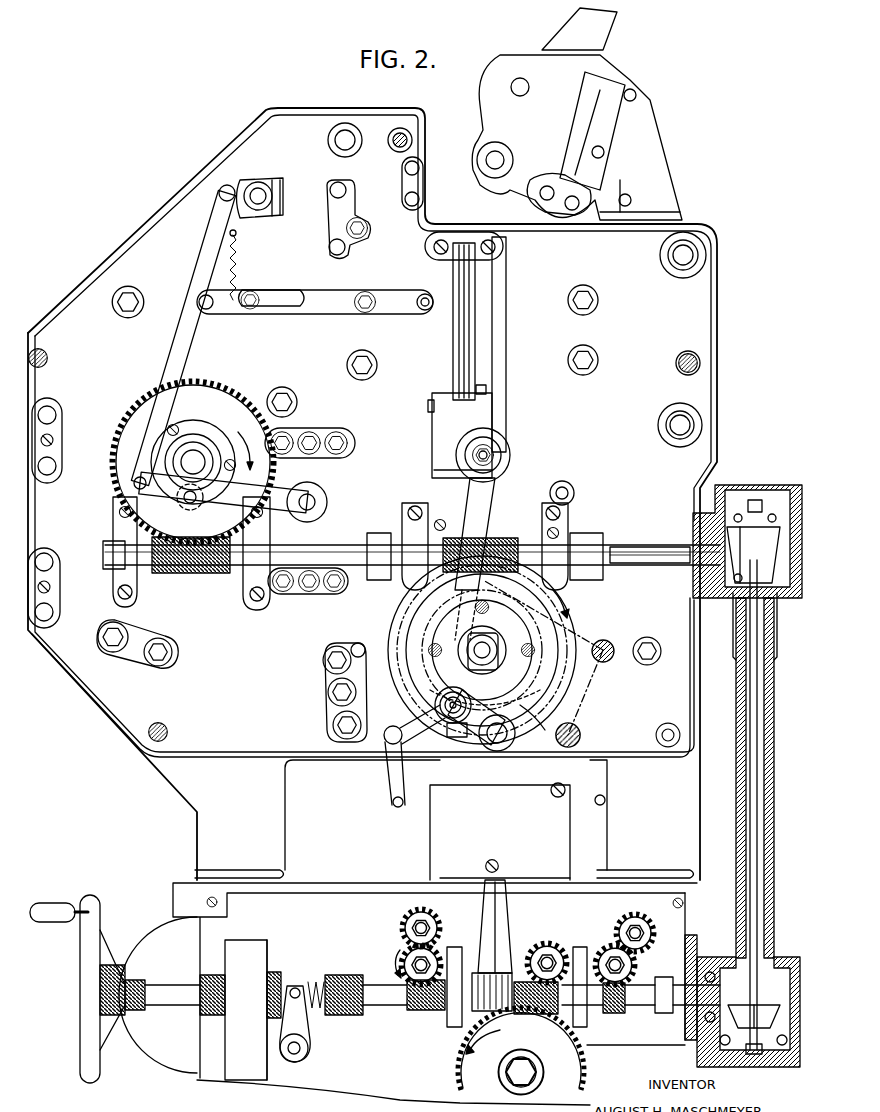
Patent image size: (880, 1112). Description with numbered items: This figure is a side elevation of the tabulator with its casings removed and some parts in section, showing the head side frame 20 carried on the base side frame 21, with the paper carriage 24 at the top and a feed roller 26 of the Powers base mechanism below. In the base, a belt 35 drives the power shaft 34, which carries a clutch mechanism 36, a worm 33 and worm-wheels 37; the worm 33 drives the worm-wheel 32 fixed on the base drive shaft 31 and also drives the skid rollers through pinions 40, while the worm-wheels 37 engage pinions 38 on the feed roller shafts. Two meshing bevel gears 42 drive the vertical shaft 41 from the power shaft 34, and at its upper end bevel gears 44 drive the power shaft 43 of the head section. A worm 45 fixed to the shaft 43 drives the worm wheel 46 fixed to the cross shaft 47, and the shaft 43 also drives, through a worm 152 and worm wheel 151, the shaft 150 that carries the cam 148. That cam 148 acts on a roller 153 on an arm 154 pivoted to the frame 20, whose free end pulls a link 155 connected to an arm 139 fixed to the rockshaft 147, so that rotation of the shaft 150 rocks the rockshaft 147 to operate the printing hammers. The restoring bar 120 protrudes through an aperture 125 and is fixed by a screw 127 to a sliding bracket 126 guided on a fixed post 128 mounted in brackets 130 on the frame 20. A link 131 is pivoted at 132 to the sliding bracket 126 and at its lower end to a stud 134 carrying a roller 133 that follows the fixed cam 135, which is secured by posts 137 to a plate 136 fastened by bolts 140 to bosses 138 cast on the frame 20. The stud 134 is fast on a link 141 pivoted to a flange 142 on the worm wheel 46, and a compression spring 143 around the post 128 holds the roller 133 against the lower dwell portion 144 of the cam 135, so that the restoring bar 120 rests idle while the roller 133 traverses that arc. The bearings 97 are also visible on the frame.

The head side frame 20 is at (78, 308).
The base side frame 21 is at (672, 917).
The paper carriage 24 is at (645, 135).
The feed roller 26 is at (403, 950).
The base drive shaft 31 is at (537, 1073).
The worm-wheel 32 is at (462, 1068).
The worm 33 is at (540, 1014).
The power shaft 34 is at (398, 1006).
The belt 35 is at (258, 1072).
The clutch mechanism 36 is at (307, 1005).
The worm-wheel 37 is at (428, 1011).
The pinion 38 is at (437, 950).
The pinion 40 is at (530, 950).
The shaft 41 is at (752, 780).
The bevel gear 42 is at (756, 1022).
The power shaft of the head section 43 is at (614, 545).
The bevel gear 44 is at (700, 522).
The worm 45 is at (507, 536).
The worm wheel 46 is at (560, 630).
The cross shaft 47 is at (500, 648).
The bearing 97 is at (695, 258).
The restoring bar 120 is at (432, 437).
The aperture 125 is at (493, 302).
The sliding bracket 126 is at (430, 408).
The screw 127 is at (486, 389).
The fixed post 128 is at (452, 292).
The bracket 130 is at (495, 247).
The link 131 is at (486, 525).
The pivot 132 is at (498, 452).
The roller 133 is at (473, 702).
The stud 134 is at (455, 712).
The fixed cam 135 is at (445, 612).
The plate 136 is at (372, 677).
The post 137 is at (432, 648).
The boss 138 is at (582, 739).
The arm 139 is at (237, 183).
The bolt 140 is at (612, 645).
The link 141 is at (542, 714).
The flange 142 is at (523, 735).
The compression spring 143 is at (433, 472).
The lower dwell portion 144 is at (540, 670).
The rockshaft 147 is at (268, 200).
The cam 148 is at (190, 450).
The shaft 150 is at (183, 460).
The worm wheel 151 is at (243, 395).
The worm 152 is at (207, 572).
The roller 153 is at (190, 510).
The arm 154 is at (280, 488).
The link 155 is at (213, 240).